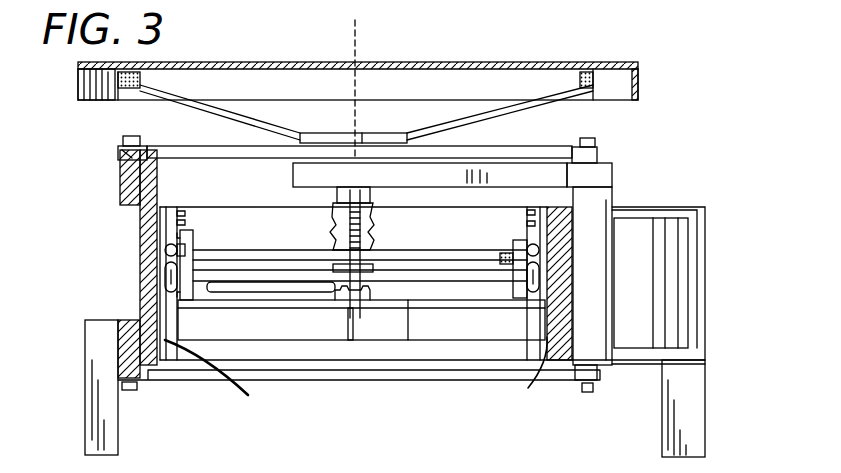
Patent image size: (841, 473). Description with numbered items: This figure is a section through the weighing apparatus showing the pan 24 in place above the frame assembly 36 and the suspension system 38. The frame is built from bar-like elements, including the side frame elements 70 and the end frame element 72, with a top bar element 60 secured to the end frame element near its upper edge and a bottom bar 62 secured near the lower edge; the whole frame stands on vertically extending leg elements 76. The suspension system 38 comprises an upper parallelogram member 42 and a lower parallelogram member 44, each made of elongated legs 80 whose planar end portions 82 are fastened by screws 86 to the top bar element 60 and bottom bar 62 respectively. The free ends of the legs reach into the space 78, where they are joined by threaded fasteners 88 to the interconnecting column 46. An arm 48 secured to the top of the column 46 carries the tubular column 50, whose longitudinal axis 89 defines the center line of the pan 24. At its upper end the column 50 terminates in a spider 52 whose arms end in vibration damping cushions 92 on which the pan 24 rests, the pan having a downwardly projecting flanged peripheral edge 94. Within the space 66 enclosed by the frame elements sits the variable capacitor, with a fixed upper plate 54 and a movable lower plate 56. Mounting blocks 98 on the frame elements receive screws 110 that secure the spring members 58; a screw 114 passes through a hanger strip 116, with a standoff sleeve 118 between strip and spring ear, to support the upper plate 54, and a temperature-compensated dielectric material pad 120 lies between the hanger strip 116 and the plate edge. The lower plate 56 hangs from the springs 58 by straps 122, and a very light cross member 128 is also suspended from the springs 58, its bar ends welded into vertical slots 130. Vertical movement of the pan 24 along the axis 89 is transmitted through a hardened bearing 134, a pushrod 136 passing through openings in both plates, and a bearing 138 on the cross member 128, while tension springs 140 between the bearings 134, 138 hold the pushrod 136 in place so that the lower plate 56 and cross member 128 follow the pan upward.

The pan 24 is at (497, 66).
The frame assembly 36 is at (132, 258).
The suspension system 38 is at (152, 248).
The upper parallelogram member 42 is at (557, 146).
The lower parallelogram member 44 is at (485, 380).
The interconnecting column 46 is at (598, 247).
The arm 48 is at (612, 183).
The tubular column 50 is at (364, 133).
The spider 52 is at (497, 112).
The upper plate 54 is at (263, 257).
The lower plate 56 is at (213, 278).
The spring members 58 is at (165, 282).
The top bar element 60 is at (120, 177).
The bottom bar 62 is at (125, 357).
The space 66 is at (362, 352).
The side frame elements 70 is at (677, 207).
The end frame element 72 is at (162, 210).
The leg elements 76 is at (693, 387).
The space 78 is at (648, 304).
The legs 80 is at (192, 146).
The end portions 82 is at (597, 148).
The screws 86 is at (134, 390).
The threaded fasteners 88 is at (597, 138).
The axis 89 is at (358, 30).
The vibration damping cushion 92 is at (175, 86).
The flanged peripheral edge 94 is at (640, 77).
The mounting block 98 is at (565, 186).
The screws 110 is at (185, 223).
The screw 114 is at (195, 235).
The hanger strip 116 is at (524, 264).
The standoff sleeve 118 is at (374, 228).
The dielectric material pad 120 is at (462, 282).
The strap 122 is at (497, 302).
The cross member 128 is at (408, 330).
The vertical slot 130 is at (356, 376).
The bearing 134 is at (355, 193).
The pushrod 136 is at (347, 224).
The bearing 138 is at (333, 300).
The tension springs 140 is at (345, 247).